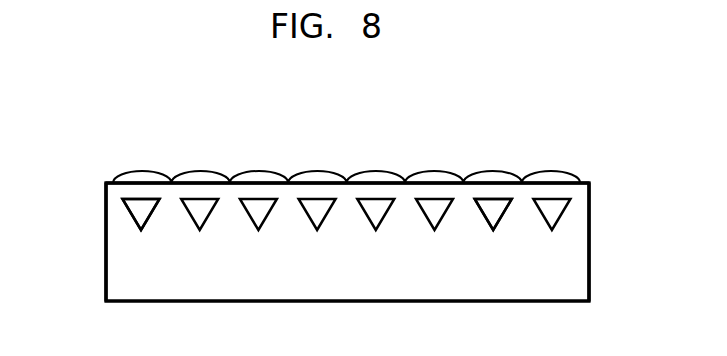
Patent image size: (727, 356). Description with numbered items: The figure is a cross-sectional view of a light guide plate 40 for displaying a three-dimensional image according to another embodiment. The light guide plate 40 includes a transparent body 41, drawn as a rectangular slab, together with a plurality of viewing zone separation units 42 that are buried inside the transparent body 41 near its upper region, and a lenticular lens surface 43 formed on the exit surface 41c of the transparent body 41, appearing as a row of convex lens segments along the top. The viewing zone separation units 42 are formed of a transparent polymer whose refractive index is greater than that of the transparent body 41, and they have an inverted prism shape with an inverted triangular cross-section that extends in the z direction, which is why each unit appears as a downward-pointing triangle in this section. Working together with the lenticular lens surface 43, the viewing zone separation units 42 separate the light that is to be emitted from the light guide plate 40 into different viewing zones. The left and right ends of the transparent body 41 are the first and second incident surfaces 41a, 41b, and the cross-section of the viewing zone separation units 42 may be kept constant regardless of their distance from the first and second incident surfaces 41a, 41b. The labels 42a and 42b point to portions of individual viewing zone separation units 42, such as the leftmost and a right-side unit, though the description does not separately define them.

The light guide plate 40 is at (603, 144).
The transparent body 41 is at (590, 219).
The first incident surface 41a is at (106, 242).
The second incident surface 41b is at (589, 242).
The exit surface 41c is at (111, 182).
The viewing zone separation units 42 is at (203, 199).
The first inclined surface of groove 42a is at (130, 205).
The second inclined surface of groove 42b is at (502, 208).
The lenticular lens surface 43 is at (317, 171).